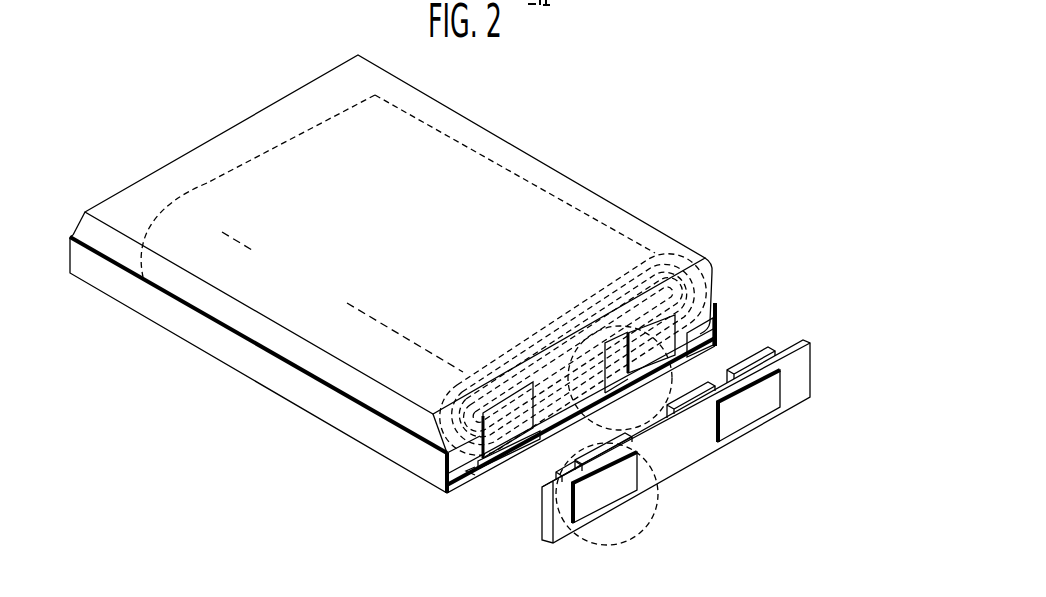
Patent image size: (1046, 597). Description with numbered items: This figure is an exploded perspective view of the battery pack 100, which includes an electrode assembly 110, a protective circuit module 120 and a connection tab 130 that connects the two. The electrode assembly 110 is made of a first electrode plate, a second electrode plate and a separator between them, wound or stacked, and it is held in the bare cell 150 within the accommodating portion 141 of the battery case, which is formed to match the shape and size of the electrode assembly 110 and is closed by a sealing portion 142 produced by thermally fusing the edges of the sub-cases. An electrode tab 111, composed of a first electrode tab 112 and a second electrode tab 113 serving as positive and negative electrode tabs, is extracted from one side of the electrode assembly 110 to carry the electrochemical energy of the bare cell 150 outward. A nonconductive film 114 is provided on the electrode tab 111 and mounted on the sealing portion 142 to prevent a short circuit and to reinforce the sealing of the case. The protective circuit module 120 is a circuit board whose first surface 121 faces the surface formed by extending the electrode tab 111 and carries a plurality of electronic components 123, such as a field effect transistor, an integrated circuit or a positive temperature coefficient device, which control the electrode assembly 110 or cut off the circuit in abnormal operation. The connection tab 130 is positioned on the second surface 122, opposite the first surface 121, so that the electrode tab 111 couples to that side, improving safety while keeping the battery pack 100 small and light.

The battery pack 100 is at (183, 61).
The electrode assembly 110 is at (431, 148).
The electrode tab 111 is at (571, 369).
The first electrode tab 112 is at (500, 412).
The second electrode tab 113 is at (626, 334).
The film 114 is at (673, 357).
The protective circuit module 120 is at (693, 410).
The first surface 121 is at (787, 346).
The second surface 122 is at (690, 455).
The electronic components 123 is at (757, 358).
The connection tab 130 is at (642, 475).
The accommodating portion 141 is at (143, 213).
The sealing portion 142 is at (456, 486).
The bare cell 150 is at (90, 290).